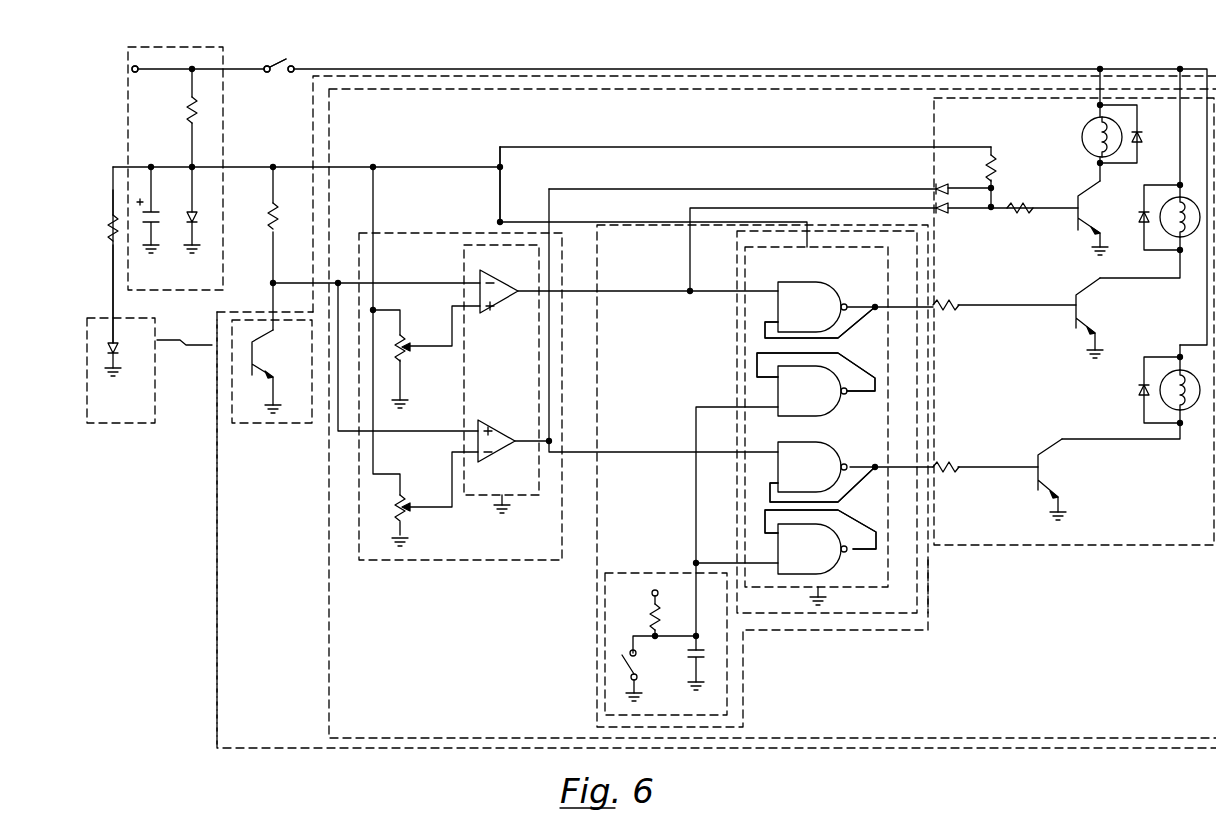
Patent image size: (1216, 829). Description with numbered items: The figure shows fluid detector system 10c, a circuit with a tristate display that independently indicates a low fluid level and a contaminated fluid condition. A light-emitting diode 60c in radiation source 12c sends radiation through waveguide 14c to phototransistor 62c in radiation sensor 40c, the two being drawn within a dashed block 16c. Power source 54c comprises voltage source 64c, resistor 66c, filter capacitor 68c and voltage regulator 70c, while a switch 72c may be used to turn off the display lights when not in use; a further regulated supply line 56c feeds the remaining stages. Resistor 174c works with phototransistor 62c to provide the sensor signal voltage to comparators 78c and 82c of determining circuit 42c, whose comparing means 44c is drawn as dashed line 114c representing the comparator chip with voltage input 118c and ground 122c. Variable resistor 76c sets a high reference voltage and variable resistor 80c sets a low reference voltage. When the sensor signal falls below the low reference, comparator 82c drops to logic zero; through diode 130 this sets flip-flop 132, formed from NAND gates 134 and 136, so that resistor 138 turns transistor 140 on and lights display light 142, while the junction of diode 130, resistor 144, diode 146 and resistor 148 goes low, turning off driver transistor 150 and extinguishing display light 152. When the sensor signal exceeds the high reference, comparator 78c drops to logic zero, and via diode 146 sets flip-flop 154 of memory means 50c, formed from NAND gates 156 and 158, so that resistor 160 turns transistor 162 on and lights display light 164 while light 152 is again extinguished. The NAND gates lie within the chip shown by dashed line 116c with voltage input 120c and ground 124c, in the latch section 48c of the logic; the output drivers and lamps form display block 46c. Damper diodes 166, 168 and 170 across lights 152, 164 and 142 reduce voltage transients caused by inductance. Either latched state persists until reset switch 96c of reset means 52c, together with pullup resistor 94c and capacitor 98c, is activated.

The fluid detector system 10c is at (700, 60).
The radiation source 12c is at (120, 425).
The waveguide 14c is at (212, 350).
The input amplifier stage 16c is at (215, 470).
The radiation sensor 40c is at (302, 424).
The determining circuit 42c is at (328, 540).
The comparing means 44c is at (386, 233).
The indicator output circuit 46c is at (1118, 545).
The logic circuit 48c is at (930, 592).
The memory means 50c is at (737, 360).
The reset means 52c is at (660, 573).
The power source 54c is at (126, 80).
The voltage regulator 56c is at (112, 198).
The light-emitting diode 60c is at (116, 343).
The phototransistor 62c is at (250, 360).
The voltage source 64c is at (140, 72).
The resistor 66c is at (189, 110).
The filter capacitor 68c is at (156, 210).
The voltage regulator 70c is at (198, 212).
The switch 72c is at (288, 62).
The load resistor 174c is at (268, 225).
The variable resistor 76c is at (404, 350).
The voltage comparator 78c is at (528, 262).
The variable resistor 80c is at (405, 512).
The voltage comparator 82c is at (528, 413).
The pullup resistor 94c is at (648, 612).
The reset switch 96c is at (622, 660).
The capacitor 98c is at (708, 656).
The dashed line 114c is at (462, 272).
The dashed line 116c is at (895, 598).
The voltage input 118c is at (498, 222).
The voltage input 120c is at (652, 225).
The ground 122c is at (496, 508).
The ground 124c is at (822, 604).
The diode 130 is at (970, 160).
The flip-flop 132 is at (887, 516).
The NAND gate 134 is at (818, 444).
The NAND gate 136 is at (836, 566).
The resistor 138 is at (946, 470).
The transistor 140 is at (1046, 468).
The display light 142 is at (1178, 360).
The resistor 144 is at (995, 165).
The diode 146 is at (944, 210).
The resistor 148 is at (1032, 186).
The transistor 150 is at (1068, 212).
The display light 152 is at (1092, 120).
The flip-flop 154 is at (885, 355).
The NAND gate 156 is at (812, 283).
The NAND gate 158 is at (836, 402).
The resistor 160 is at (938, 300).
The transistor 162 is at (1085, 305).
The display light 164 is at (1176, 240).
The damper diode 166 is at (1140, 142).
The damper diode 168 is at (1140, 220).
The damper diode 170 is at (1140, 391).